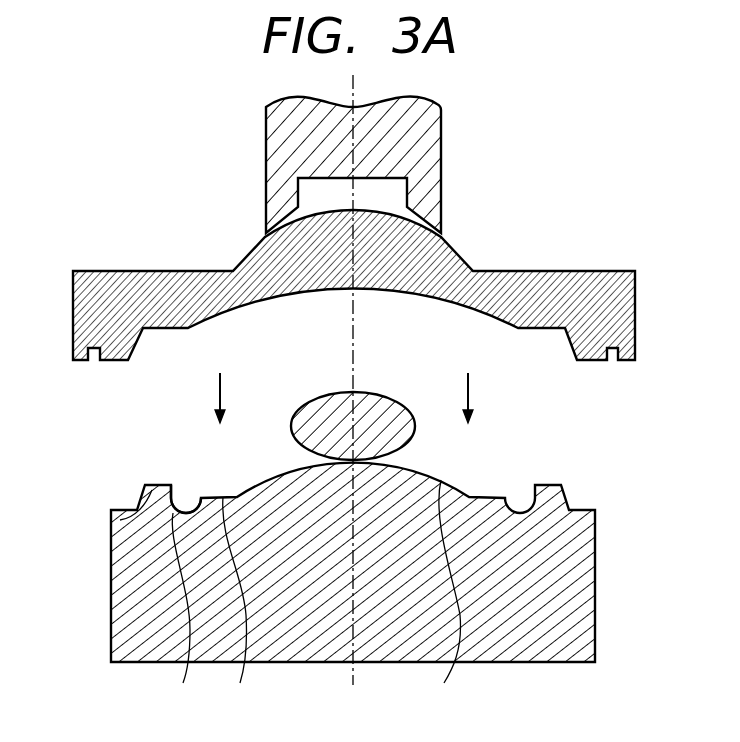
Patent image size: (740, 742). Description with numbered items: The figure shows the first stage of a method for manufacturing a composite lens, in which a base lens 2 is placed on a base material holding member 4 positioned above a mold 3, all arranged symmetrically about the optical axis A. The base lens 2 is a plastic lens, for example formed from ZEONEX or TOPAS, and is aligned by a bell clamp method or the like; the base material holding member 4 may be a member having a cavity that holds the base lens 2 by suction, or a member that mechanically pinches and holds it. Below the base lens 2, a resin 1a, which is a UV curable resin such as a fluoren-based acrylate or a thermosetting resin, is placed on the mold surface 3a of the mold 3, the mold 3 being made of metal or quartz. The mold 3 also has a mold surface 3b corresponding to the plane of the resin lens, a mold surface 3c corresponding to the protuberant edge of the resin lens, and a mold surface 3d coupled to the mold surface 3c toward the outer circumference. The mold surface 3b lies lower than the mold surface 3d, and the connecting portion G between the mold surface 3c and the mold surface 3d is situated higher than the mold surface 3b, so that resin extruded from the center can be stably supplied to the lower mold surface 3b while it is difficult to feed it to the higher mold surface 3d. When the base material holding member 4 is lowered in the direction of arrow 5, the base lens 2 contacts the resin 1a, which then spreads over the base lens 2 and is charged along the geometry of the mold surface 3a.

The base lens 2 is at (622, 302).
The base material holding member 4 is at (425, 143).
The resin 1a is at (400, 435).
The mold 3 is at (578, 587).
The mold surface 3a is at (444, 596).
The mold surface 3b is at (239, 607).
The mold surface 3c is at (180, 612).
The mold surface 3d is at (120, 520).
The connecting portion G is at (173, 468).
The arrow 5 is at (344, 398).
The optical axis A is at (363, 380).